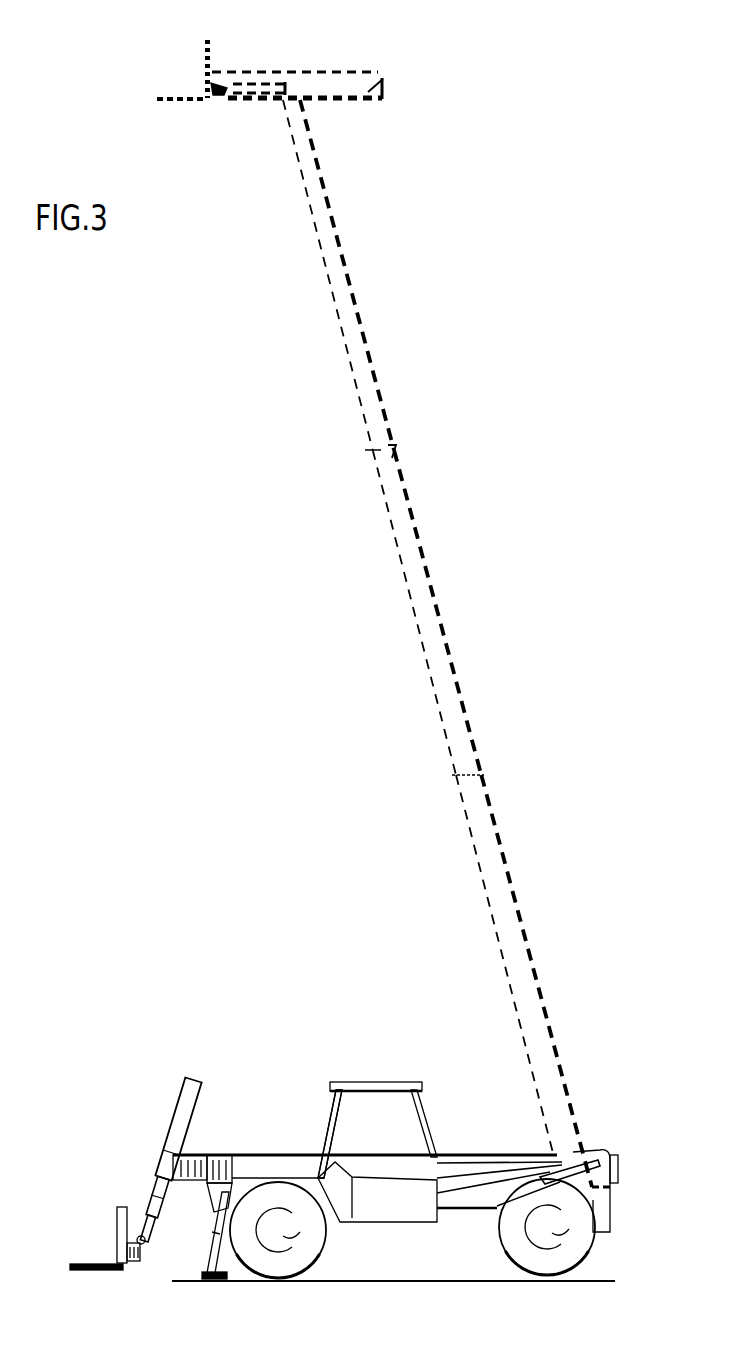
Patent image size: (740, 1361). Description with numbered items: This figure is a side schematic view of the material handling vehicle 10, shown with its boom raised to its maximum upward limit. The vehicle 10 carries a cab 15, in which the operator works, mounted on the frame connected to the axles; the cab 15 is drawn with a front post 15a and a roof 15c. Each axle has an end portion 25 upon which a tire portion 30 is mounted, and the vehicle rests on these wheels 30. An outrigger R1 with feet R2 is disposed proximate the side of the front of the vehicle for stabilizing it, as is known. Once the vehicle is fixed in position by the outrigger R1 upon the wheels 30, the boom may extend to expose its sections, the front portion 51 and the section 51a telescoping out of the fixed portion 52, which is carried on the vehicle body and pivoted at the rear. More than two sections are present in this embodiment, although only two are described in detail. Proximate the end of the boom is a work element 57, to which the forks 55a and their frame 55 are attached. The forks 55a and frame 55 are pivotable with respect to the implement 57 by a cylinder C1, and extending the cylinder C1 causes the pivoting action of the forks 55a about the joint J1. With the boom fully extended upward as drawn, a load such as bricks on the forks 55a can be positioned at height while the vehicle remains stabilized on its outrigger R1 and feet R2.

The material handling vehicle 10 is at (400, 1036).
The cab 15 is at (352, 1081).
The cab front post 15a is at (328, 1134).
The cab roof 15c is at (404, 1081).
The end portion 25 is at (303, 1228).
The tire portion 30 is at (270, 1195).
The front portion of boom 51 is at (334, 238).
The boom section 51a is at (420, 558).
The fixed portion of boom 52 is at (496, 860).
The frame 55 is at (217, 60).
The forks 55a is at (168, 96).
The work element 57 is at (383, 84).
The cylinder C1 is at (150, 1213).
The pivot joint J1 is at (212, 98).
The outrigger R1 is at (215, 1228).
The feet R2 is at (215, 1285).